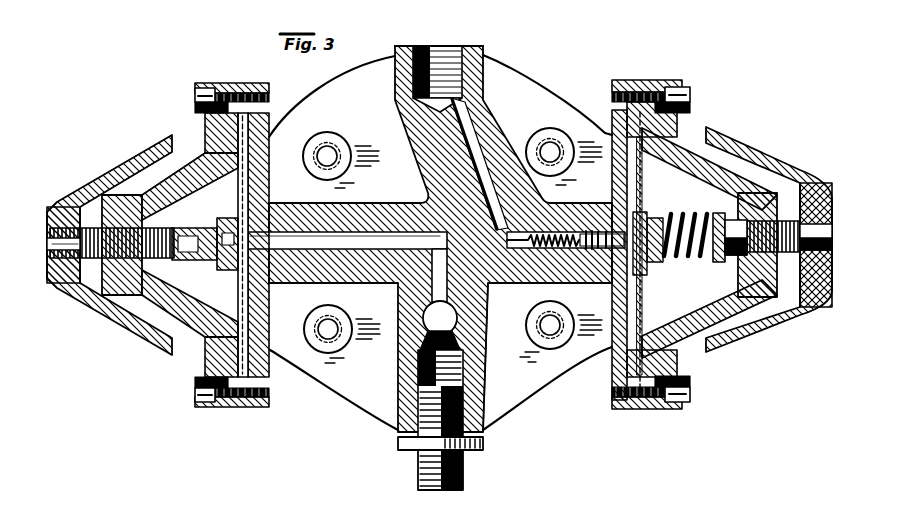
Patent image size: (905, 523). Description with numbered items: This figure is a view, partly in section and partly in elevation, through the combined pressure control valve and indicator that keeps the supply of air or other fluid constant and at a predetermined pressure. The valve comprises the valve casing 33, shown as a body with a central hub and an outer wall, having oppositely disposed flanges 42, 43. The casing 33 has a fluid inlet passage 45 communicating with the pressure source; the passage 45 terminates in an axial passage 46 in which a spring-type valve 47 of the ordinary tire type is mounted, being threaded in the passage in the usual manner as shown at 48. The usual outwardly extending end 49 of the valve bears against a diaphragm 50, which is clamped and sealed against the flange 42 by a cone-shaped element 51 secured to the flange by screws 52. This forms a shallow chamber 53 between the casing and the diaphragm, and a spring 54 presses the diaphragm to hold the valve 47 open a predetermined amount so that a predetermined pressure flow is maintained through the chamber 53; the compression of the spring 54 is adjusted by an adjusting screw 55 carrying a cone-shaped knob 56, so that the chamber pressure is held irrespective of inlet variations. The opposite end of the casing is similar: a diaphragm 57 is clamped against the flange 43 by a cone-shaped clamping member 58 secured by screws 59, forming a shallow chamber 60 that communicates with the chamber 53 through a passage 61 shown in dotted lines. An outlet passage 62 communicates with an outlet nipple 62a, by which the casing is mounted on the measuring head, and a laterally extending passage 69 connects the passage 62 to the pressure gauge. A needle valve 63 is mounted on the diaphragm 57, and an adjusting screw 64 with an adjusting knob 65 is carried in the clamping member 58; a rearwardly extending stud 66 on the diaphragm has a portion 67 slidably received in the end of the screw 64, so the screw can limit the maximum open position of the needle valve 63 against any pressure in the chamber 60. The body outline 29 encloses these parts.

The valve body 29 is at (502, 61).
The valve casing 33 is at (520, 93).
The fluid inlet passage 45 is at (472, 147).
The outlet passage 62 is at (368, 250).
The passage 61 is at (502, 268).
The laterally extending passage 69 is at (428, 324).
The outlet nipple 62a is at (417, 443).
The axial passage 46 is at (553, 251).
The valve 47 is at (592, 250).
The threaded connection 48 is at (632, 266).
The outwardly extending end 49 is at (576, 330).
The shallow chamber 60 is at (272, 352).
The needle valve 63 is at (262, 236).
The flange 43 is at (256, 82).
The screws 59 is at (198, 92).
The cone-shaped clamping member 58 is at (182, 340).
The diaphragm 57 is at (197, 350).
The adjusting knob 65 is at (122, 328).
The adjusting screw 64 is at (165, 259).
The rearwardly extending stud 66 is at (225, 262).
The portion 67 is at (200, 226).
The diaphragm 50 is at (641, 167).
The flange 42 is at (630, 80).
The screws 52 is at (684, 88).
The shallow chamber 53 is at (608, 348).
The cone-shaped element 51 is at (692, 134).
The cone-shaped knob 56 is at (745, 325).
The spring 54 is at (684, 219).
The adjusting screw 55 is at (787, 280).